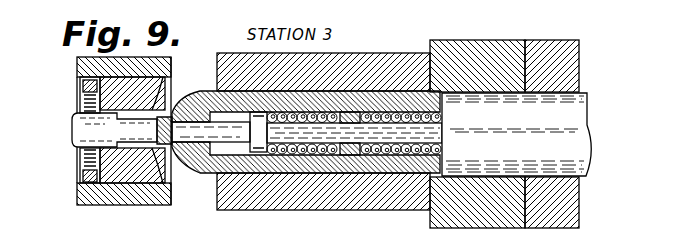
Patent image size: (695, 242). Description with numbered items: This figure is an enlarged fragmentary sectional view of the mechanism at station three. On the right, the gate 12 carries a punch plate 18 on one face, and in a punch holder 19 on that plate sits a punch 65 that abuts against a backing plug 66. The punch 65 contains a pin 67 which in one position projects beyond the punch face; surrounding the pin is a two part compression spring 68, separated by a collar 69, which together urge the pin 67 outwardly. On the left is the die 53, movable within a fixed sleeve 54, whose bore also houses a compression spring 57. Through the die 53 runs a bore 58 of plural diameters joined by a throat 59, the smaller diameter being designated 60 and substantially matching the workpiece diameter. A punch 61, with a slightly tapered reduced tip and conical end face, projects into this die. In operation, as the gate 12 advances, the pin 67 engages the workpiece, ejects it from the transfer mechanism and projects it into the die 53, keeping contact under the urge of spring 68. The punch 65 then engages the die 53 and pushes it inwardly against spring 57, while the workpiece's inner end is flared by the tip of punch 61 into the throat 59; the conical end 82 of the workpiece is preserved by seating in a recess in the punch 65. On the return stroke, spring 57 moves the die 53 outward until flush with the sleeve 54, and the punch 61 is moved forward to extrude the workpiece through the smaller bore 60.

The gate 12 is at (580, 70).
The punch plate 18 is at (512, 218).
The punch holder 19 is at (229, 53).
The die 53 is at (80, 175).
The fixed sleeve 54 is at (77, 63).
The compression spring 57 is at (80, 88).
The bore 58 is at (80, 157).
The throat 59 is at (167, 72).
The smaller diameter of the bore 60 is at (170, 180).
The punch 61 is at (76, 120).
The punch 65 is at (327, 100).
The backing plug 66 is at (577, 117).
The pin 67 is at (442, 138).
The two part compression spring 68 is at (352, 113).
The collar 69 is at (380, 93).
The conical end of the workpiece 82 is at (177, 107).